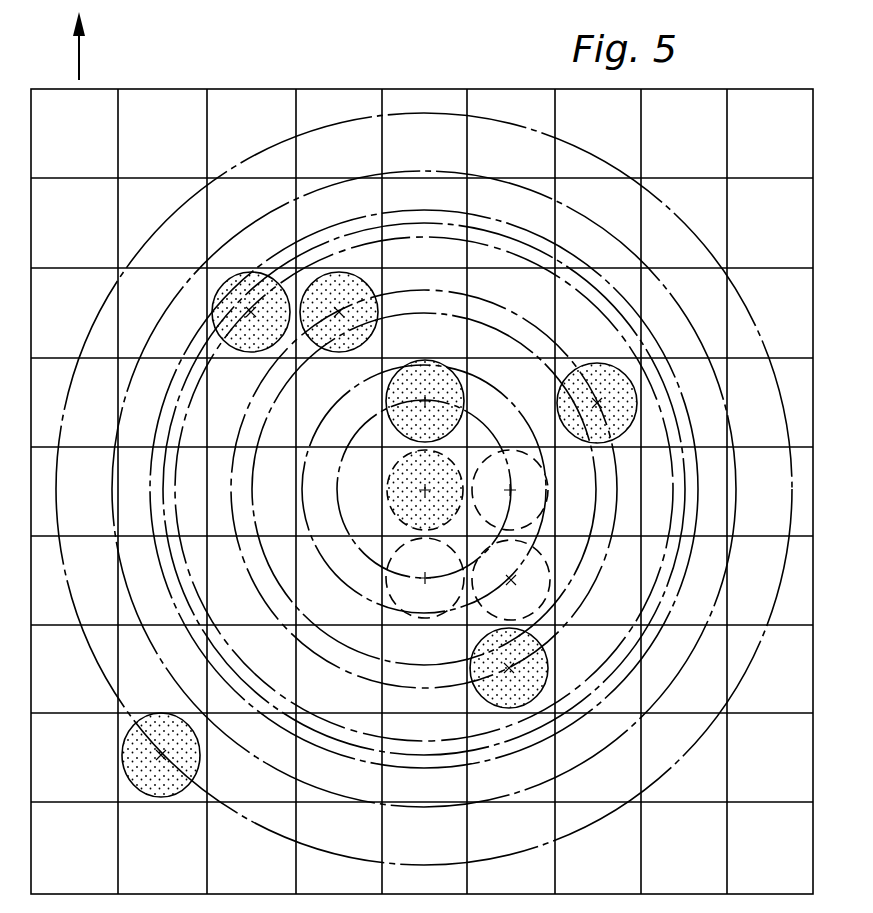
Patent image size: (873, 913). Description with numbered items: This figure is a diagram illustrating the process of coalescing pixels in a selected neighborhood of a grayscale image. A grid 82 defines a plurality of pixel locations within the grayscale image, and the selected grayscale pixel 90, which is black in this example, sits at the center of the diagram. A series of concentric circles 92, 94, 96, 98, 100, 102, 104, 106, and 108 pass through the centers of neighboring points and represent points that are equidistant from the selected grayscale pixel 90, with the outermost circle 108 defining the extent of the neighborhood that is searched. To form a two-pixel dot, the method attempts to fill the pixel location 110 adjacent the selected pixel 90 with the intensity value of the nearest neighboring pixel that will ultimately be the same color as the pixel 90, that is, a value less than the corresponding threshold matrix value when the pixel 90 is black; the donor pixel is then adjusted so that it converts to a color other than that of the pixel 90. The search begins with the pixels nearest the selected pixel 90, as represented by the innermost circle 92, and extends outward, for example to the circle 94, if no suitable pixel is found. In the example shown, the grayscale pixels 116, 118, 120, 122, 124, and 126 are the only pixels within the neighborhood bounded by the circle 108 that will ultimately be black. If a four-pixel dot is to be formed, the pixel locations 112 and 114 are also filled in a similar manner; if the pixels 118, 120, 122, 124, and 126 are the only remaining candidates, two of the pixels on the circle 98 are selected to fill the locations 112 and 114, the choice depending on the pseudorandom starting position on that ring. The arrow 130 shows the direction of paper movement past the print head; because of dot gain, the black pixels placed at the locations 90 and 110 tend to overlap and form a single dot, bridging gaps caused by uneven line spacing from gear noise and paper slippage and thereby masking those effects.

The grid 82 is at (228, 87).
The arrow 130 is at (80, 46).
The selected grayscale pixel 90 is at (425, 490).
The concentric circle 92 is at (338, 477).
The concentric circle 94 is at (344, 395).
The concentric circle 96 is at (404, 320).
The concentric circle 98 is at (480, 296).
The concentric circle 100 is at (390, 238).
The concentric circle 102 is at (474, 224).
The concentric circle 104 is at (356, 217).
The concentric circle 106 is at (266, 212).
The concentric circle 108 is at (180, 206).
The pixel location 110 is at (425, 578).
The pixel location 112 is at (510, 490).
The pixel location 114 is at (511, 580).
The grayscale pixel 116 is at (425, 401).
The grayscale pixel 118 is at (339, 312).
The grayscale pixel 120 is at (597, 403).
The grayscale pixel 122 is at (509, 668).
The grayscale pixel 124 is at (251, 312).
The grayscale pixel 126 is at (161, 755).